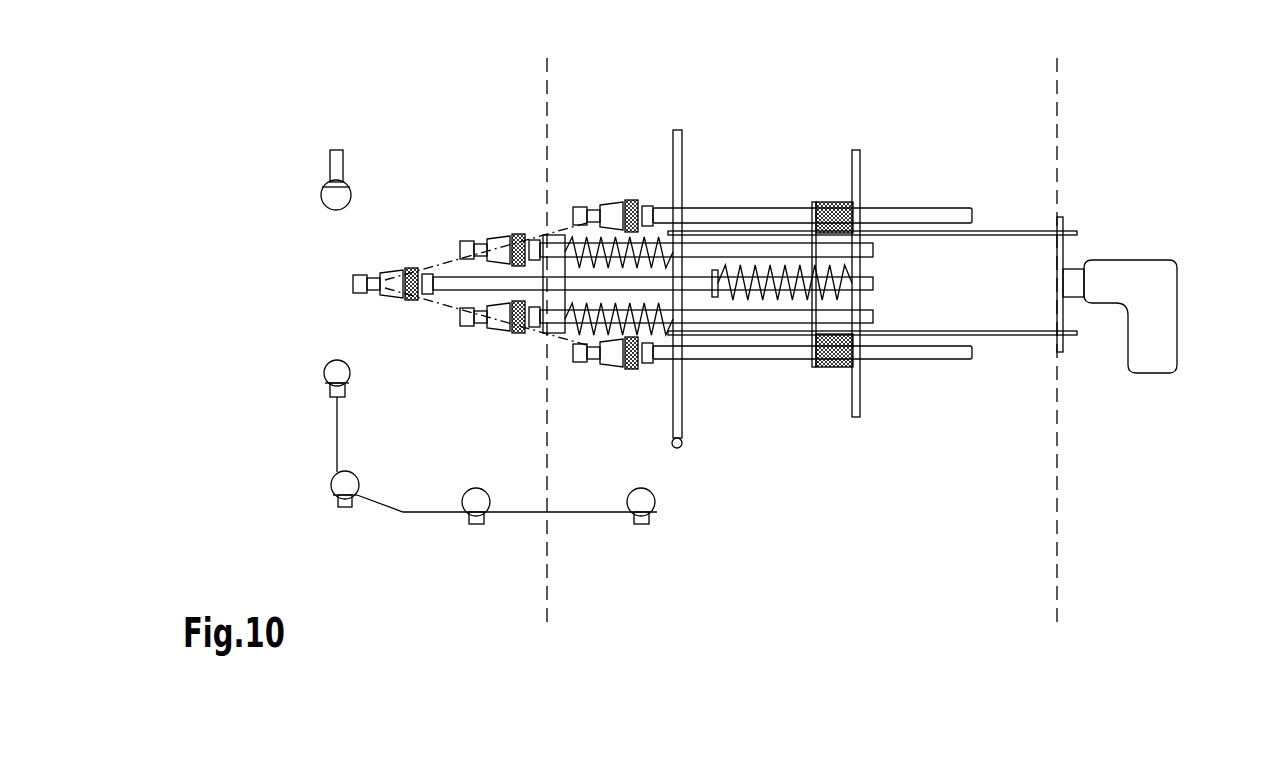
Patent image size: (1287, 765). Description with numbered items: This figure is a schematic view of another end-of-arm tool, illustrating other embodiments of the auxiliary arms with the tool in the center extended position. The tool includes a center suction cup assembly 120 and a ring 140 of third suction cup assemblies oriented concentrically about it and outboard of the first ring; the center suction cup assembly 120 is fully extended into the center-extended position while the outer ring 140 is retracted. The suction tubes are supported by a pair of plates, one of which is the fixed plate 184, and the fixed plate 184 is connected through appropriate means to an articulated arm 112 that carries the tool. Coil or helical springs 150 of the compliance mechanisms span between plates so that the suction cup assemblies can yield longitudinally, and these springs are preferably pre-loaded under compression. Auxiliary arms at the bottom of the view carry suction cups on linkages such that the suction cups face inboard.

The ring of third suction cup assemblies 140 is at (703, 214).
The spring 150 is at (735, 246).
The center suction cup assembly 120 is at (748, 279).
The fixed plate 184 is at (858, 163).
The articulated arm 112 is at (1152, 373).